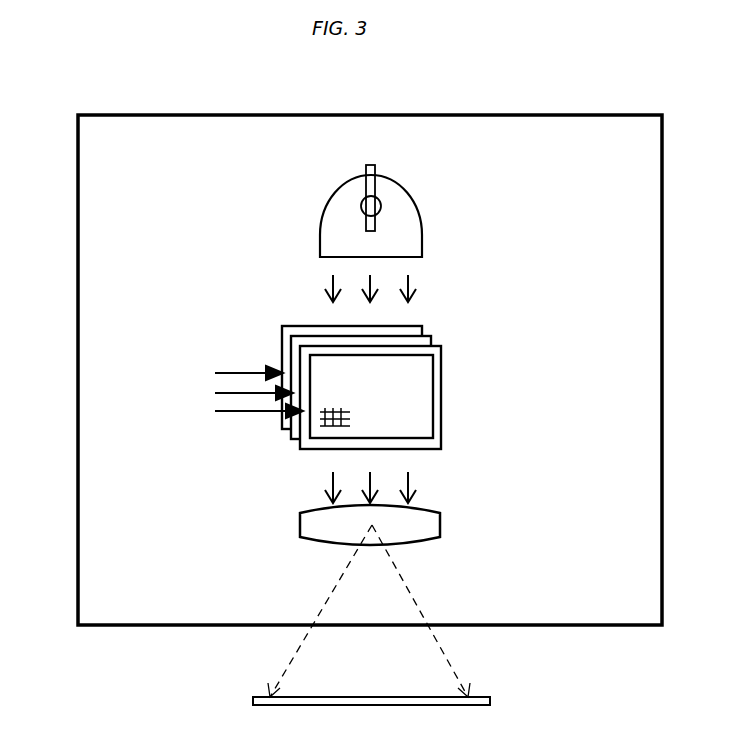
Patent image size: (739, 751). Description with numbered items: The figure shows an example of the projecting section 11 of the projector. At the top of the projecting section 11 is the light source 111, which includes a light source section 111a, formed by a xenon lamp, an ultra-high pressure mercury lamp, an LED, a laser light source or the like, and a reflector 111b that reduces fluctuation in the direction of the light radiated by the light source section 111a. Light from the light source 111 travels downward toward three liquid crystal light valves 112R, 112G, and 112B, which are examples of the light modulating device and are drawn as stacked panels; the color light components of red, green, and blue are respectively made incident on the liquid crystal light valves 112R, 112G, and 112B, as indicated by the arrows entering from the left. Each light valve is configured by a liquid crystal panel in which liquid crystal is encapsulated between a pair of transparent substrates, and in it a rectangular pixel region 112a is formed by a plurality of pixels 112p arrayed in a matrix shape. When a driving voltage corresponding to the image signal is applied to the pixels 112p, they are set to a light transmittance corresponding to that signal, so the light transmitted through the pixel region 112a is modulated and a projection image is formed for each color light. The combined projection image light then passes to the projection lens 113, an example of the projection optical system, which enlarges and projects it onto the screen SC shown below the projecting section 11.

The projecting section 11 is at (198, 113).
The light source 111 is at (320, 236).
The light source section 111a is at (361, 206).
The reflector 111b is at (409, 197).
The liquid crystal light valve 112B is at (418, 332).
The liquid crystal light valve 112G is at (426, 341).
The liquid crystal light valve 112R is at (438, 380).
The pixel region 112a is at (418, 416).
The pixel 112p is at (327, 427).
The projection lens 113 is at (310, 526).
The screen SC is at (262, 697).